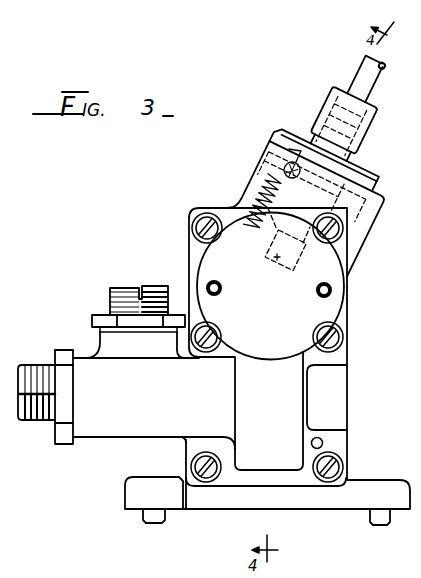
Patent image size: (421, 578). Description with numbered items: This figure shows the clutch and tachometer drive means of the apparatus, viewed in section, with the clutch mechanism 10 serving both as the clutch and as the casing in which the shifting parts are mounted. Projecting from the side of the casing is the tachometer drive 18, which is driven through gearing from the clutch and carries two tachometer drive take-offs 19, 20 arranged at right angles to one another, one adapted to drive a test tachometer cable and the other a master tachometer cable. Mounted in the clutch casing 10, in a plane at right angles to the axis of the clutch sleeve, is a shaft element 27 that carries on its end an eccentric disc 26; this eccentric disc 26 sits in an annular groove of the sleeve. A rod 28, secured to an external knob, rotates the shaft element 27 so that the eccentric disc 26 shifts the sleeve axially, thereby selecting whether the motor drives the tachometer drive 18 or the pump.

The clutch mechanism 10 is at (355, 283).
The tachometer drive 18 is at (97, 430).
The tachometer drive take-off 19 is at (34, 427).
The tachometer drive take-off 20 is at (118, 290).
The eccentric disc 26 is at (270, 264).
The shaft element 27 is at (365, 136).
The rod 28 is at (363, 60).